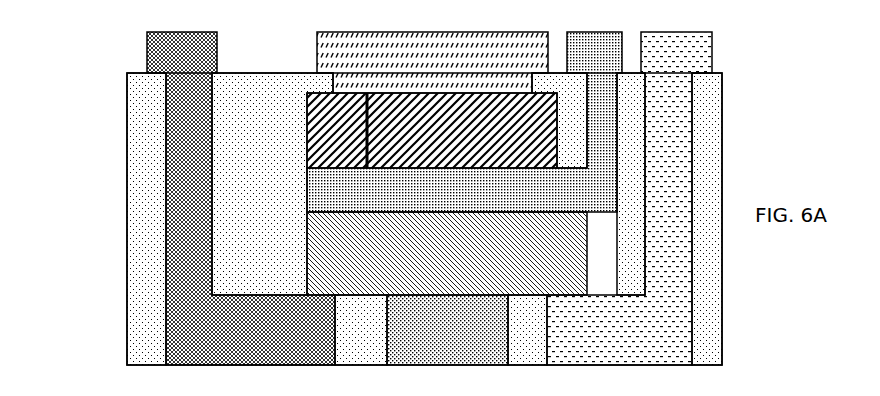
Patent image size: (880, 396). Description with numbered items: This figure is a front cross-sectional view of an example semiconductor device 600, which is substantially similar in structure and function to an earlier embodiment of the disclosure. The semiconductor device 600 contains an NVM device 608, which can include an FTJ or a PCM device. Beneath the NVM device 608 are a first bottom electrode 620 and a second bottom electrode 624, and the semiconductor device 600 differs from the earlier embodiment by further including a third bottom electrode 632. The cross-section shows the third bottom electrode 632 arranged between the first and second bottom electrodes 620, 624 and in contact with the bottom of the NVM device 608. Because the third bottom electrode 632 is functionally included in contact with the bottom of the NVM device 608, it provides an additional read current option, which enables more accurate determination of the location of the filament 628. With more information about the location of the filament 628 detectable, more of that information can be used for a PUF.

The semiconductor device 600 is at (75, 98).
The NVM device 608 is at (432, 262).
The first bottom electrode 620 is at (211, 340).
The second bottom electrode 624 is at (618, 340).
The filament 628 is at (365, 146).
The third bottom electrode 632 is at (427, 340).